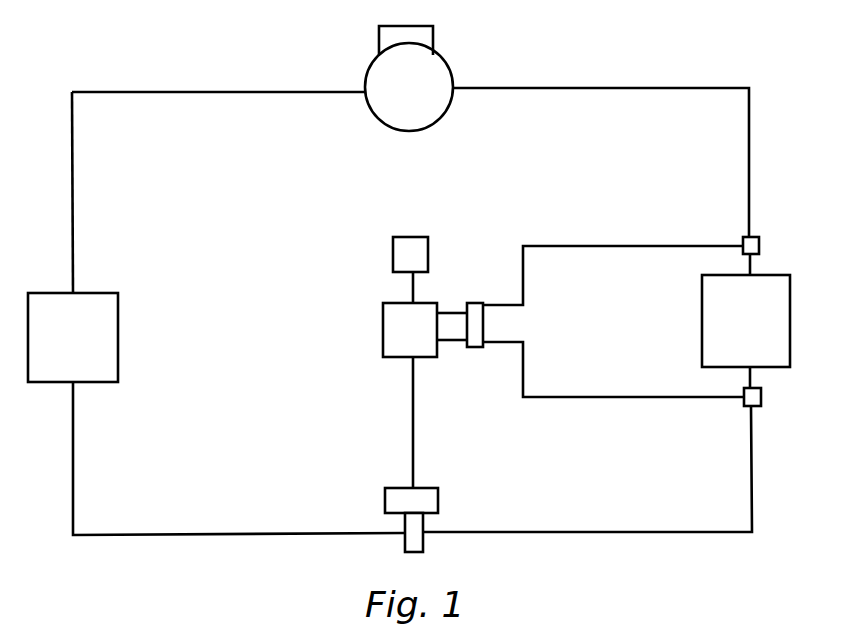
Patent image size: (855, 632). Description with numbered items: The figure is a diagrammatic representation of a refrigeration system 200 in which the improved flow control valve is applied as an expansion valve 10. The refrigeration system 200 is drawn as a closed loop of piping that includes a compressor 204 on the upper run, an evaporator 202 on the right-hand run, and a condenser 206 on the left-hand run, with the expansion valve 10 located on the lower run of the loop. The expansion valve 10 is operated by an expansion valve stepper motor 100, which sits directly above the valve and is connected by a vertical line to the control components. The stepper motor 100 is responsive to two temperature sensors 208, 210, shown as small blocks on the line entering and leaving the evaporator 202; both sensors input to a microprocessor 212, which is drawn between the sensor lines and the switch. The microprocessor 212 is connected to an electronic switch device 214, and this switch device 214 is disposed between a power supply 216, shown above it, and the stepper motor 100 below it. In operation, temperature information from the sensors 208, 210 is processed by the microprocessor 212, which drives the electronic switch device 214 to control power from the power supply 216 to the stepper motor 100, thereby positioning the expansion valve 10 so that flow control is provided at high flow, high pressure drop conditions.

The refrigeration system 200 is at (690, 87).
The compressor 204 is at (453, 70).
The temperature sensor 210 is at (759, 246).
The evaporator 202 is at (702, 313).
The temperature sensor 208 is at (761, 397).
The microprocessor 212 is at (475, 303).
The power supply 216 is at (408, 237).
The electronic switch device 214 is at (383, 335).
The condenser 206 is at (118, 335).
The expansion valve stepper motor 100 is at (385, 500).
The expansion valve 10 is at (425, 525).